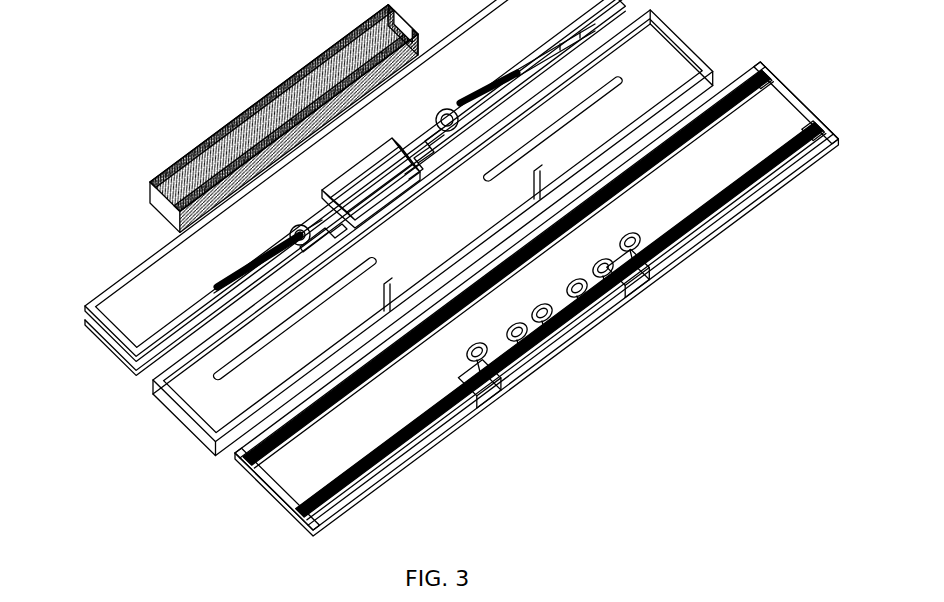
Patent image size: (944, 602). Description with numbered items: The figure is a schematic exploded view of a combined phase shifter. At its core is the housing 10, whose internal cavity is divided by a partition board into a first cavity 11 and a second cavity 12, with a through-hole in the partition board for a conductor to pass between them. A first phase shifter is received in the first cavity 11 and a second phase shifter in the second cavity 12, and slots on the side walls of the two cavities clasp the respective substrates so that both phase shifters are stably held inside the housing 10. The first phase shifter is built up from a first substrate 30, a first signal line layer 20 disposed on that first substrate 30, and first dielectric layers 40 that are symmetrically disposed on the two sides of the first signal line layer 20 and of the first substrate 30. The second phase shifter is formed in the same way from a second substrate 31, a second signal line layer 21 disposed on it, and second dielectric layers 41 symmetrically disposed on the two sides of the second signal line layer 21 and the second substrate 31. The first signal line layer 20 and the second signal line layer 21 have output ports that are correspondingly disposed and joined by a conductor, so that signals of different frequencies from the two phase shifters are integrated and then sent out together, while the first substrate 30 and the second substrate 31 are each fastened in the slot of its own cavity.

The housing 10 is at (757, 207).
The first cavity 11 is at (240, 468).
The second cavity 12 is at (258, 487).
The first signal line layer 20 is at (103, 305).
The second signal line layer 21 is at (100, 337).
The first substrate 30 is at (167, 375).
The second substrate 31 is at (163, 397).
The first dielectric layers 40 is at (160, 193).
The second dielectric layers 41 is at (150, 208).